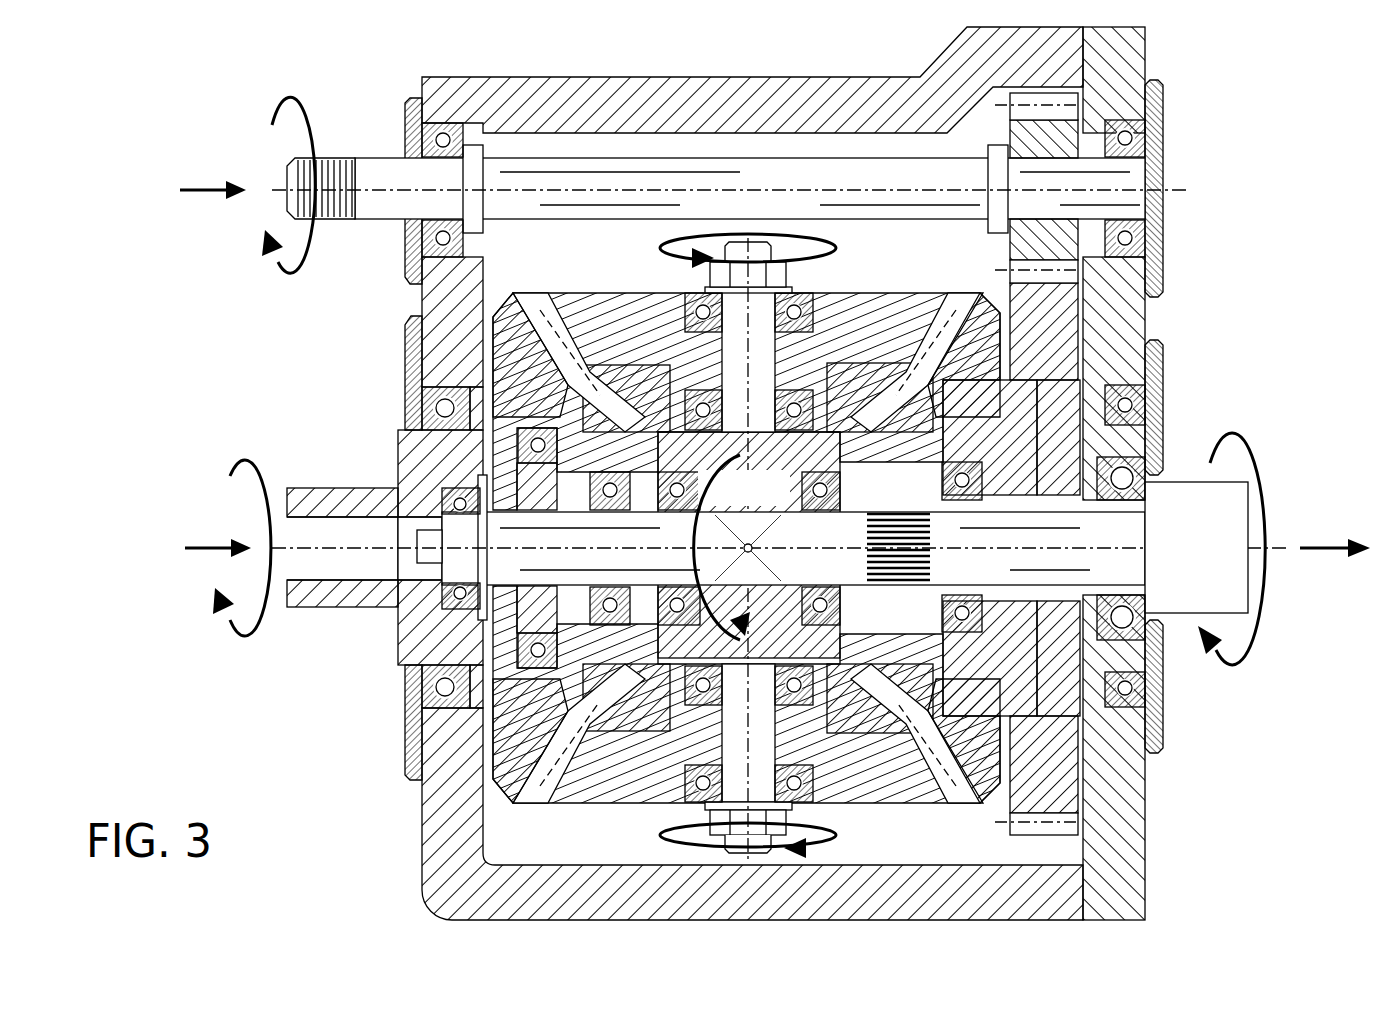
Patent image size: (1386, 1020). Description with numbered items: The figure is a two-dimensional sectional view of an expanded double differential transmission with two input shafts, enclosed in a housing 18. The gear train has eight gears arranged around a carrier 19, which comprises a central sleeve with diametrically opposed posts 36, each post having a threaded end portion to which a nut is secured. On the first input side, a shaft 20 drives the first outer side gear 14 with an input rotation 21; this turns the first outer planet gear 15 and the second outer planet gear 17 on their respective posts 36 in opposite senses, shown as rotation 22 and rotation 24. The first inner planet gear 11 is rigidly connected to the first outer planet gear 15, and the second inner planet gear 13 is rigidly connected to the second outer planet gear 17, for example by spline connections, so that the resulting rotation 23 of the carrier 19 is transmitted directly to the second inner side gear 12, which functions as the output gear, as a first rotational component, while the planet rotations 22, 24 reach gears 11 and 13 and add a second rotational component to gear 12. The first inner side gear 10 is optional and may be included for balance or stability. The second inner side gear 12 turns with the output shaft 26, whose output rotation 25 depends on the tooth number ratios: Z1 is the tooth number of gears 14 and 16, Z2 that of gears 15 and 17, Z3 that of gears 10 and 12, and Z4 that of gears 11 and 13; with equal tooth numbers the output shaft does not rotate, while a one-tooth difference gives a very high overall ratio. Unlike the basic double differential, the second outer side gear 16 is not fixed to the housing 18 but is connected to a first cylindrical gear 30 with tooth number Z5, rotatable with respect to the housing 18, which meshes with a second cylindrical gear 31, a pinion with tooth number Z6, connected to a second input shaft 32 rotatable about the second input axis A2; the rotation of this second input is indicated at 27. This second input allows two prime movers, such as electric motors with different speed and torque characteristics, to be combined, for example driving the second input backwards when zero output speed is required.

The first inner side gear 10 is at (545, 612).
The first inner planet gear 11 is at (612, 378).
The second inner side gear 12 is at (945, 440).
The second inner planet gear 13 is at (565, 718).
The first outer side gear 14 is at (508, 368).
The first outer planet gear 15 is at (640, 330).
The second outer side gear 16 is at (1095, 703).
The second outer planet gear 17 is at (600, 792).
The housing 18 is at (1112, 860).
The carrier 19 is at (875, 350).
The shaft 20 is at (318, 497).
The input rotation 21 is at (210, 565).
The rotation 22 is at (804, 252).
The rotation of the carrier 23 is at (748, 547).
The rotation 24 is at (808, 838).
The rotation 25 is at (1290, 570).
The output shaft 26 is at (1174, 500).
The rotation angle phi6 of input 2 27 is at (233, 211).
The first cylindrical gear 30 is at (1060, 300).
The second cylindrical gear 31 is at (1062, 143).
The second input shaft 32 is at (528, 177).
The posts 36 is at (762, 358).
The input axis A2 is at (372, 185).
The number of teeth Z1 is at (493, 330).
The number of teeth Z2 is at (622, 330).
The number of teeth Z3 is at (578, 640).
The number of teeth Z4 is at (540, 312).
The number of teeth Z5 is at (1072, 322).
The number of teeth Z6 is at (1060, 143).